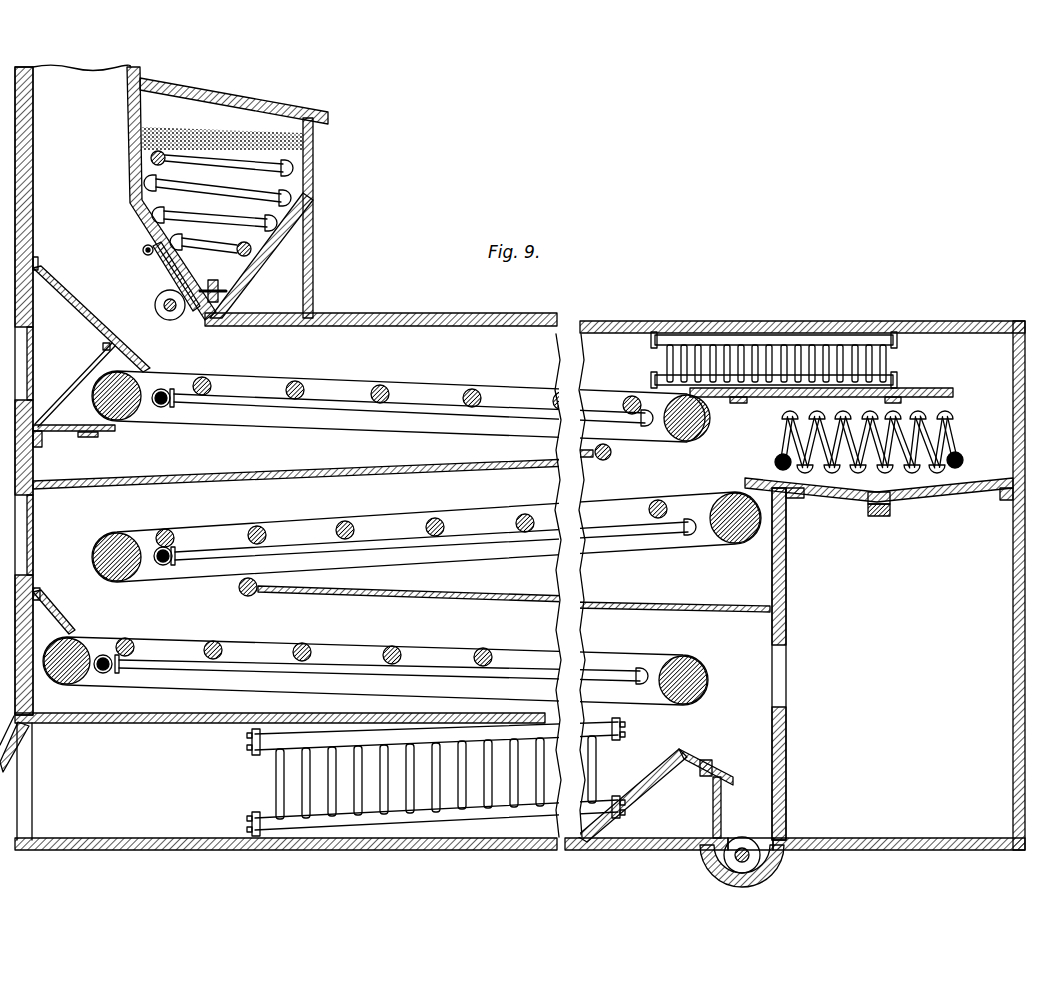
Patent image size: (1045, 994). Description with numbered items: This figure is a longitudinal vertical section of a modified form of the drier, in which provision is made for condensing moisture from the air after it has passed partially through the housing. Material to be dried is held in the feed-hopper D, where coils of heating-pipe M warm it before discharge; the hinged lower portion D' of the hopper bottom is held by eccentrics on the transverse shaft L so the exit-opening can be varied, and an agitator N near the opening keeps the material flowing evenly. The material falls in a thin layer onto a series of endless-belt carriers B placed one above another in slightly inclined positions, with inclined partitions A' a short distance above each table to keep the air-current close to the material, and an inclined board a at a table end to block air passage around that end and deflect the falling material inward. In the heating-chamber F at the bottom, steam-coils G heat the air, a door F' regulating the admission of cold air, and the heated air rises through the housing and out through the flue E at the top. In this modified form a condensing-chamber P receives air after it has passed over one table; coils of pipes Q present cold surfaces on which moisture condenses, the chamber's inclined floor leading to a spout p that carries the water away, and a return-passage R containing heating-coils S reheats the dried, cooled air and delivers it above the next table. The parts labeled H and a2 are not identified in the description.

The flue E is at (72, 452).
The feed-hopper D is at (227, 193).
The coils of heating-pipe M is at (206, 210).
The hinged lower portion of hopper bottom D' is at (174, 276).
The agitator N is at (215, 281).
The transverse shaft L is at (157, 305).
The drying chamber casing H is at (520, 591).
The inclined board a is at (91, 445).
The shelf a2 is at (33, 363).
The inclined partitions A' is at (401, 528).
The endless-belt carriers B is at (402, 532).
The heating-chamber F is at (280, 751).
The door F' is at (14, 761).
The steam-coils G is at (436, 777).
The heating-coils S is at (672, 360).
The return-passage R is at (851, 594).
The coils of pipes Q is at (786, 445).
The condensing-chamber P is at (958, 448).
The spout p is at (890, 510).